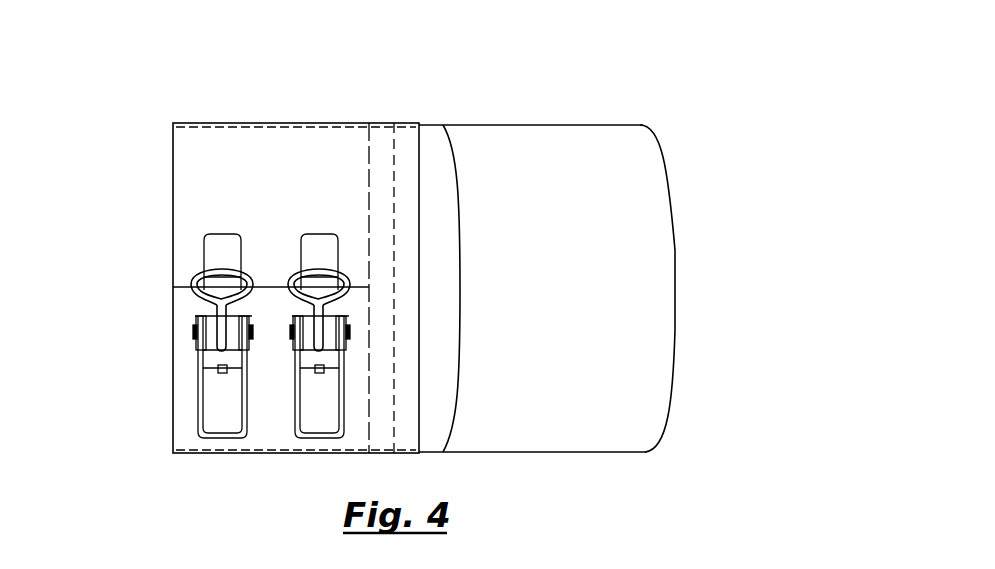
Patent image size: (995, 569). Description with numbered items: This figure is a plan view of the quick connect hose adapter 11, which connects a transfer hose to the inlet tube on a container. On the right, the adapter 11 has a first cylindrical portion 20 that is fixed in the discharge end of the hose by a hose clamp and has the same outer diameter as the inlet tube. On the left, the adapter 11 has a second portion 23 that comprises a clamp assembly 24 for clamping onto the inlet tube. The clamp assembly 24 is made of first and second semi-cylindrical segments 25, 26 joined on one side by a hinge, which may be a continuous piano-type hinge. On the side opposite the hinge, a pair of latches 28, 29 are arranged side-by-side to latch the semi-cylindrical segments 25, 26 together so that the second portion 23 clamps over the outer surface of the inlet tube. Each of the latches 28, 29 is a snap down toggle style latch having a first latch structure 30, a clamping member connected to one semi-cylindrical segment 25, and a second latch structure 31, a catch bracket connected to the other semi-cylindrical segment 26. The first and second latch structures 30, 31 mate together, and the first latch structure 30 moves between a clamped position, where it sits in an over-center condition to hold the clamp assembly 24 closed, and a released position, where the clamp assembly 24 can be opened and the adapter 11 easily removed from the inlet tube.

The quick connect hose adapter 11 is at (93, 75).
The first cylindrical portion 20 is at (558, 138).
The second portion 23 is at (381, 123).
The clamp assembly 24 is at (181, 214).
The first semi-cylindrical segment 25 is at (265, 438).
The second semi-cylindrical segment 26 is at (250, 147).
The latch 28 is at (200, 362).
The latch 29 is at (306, 440).
The first latch structure 30 is at (196, 325).
The second latch structure 31 is at (218, 260).